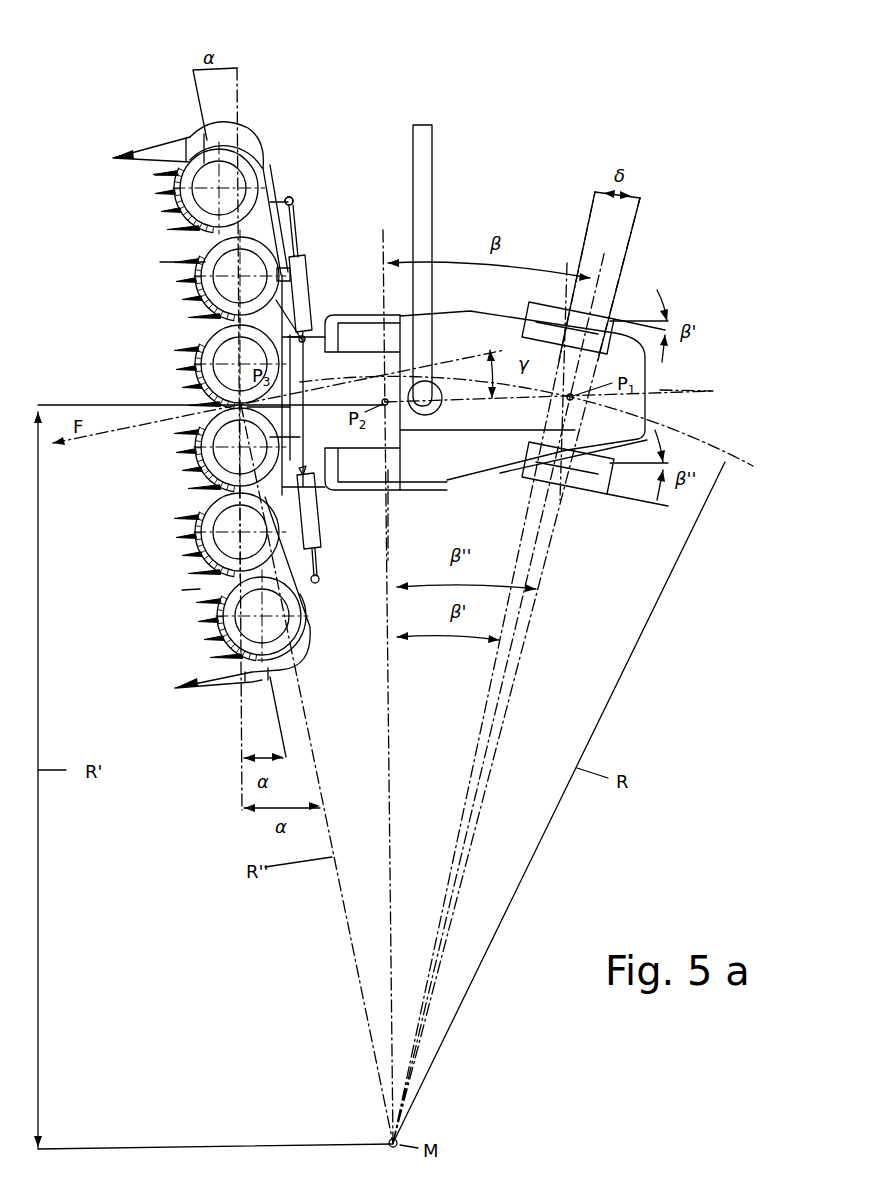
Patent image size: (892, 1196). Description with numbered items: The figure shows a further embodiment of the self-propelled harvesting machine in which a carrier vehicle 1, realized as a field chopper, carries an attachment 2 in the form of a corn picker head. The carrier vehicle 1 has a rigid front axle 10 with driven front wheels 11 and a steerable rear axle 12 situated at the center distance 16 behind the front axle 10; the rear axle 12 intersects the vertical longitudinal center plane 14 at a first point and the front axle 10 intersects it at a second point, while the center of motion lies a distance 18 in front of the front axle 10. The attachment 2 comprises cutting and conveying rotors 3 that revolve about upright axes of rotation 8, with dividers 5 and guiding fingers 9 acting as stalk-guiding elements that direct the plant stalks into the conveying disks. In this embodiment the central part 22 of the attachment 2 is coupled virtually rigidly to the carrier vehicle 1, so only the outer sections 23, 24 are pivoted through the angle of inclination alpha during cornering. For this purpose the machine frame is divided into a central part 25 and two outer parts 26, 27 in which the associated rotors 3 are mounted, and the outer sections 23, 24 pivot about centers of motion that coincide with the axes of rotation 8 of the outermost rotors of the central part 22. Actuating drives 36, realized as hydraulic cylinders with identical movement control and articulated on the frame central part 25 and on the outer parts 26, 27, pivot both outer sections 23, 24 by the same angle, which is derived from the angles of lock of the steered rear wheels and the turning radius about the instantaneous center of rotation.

The carrier vehicle 1 is at (470, 225).
The attachment 2 is at (268, 78).
The cutting and conveying rotors 3 is at (182, 203).
The dividers 5 is at (140, 148).
The axis of rotation 8 is at (292, 240).
The guiding fingers 9 is at (205, 262).
The front axle 10 is at (396, 510).
The front wheels 11 is at (345, 315).
The rear axle 12 is at (573, 521).
The vertical longitudinal center plane 14 is at (712, 385).
The center distance 16 is at (466, 432).
The distance 18 is at (289, 420).
The central part of the attachment 22 is at (152, 400).
The outer section of the attachment 23 is at (108, 255).
The outer section of the attachment 24 is at (175, 590).
The central part of the machine frame 25 is at (281, 305).
The outer part of the machine frame 26 is at (265, 178).
The outer part of the machine frame 27 is at (305, 625).
The actuating drive 36 is at (310, 270).